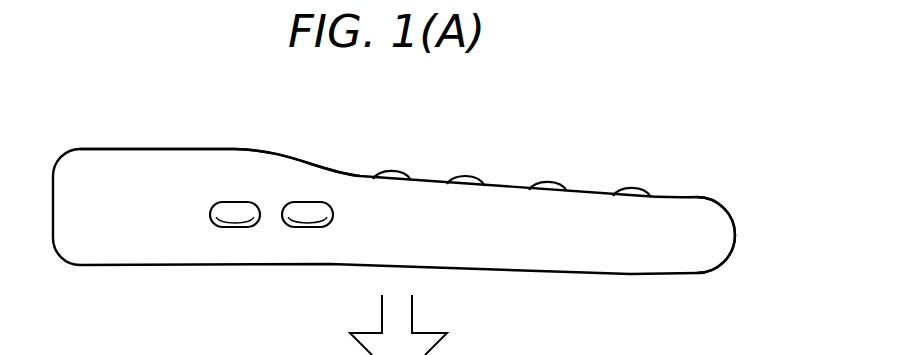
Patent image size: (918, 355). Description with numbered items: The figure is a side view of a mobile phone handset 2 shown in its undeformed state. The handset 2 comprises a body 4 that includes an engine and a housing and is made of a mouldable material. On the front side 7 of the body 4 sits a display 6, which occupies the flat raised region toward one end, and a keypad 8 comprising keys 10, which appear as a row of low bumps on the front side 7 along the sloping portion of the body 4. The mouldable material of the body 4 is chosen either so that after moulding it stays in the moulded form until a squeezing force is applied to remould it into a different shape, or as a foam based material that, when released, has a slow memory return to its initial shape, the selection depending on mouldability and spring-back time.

The mobile phone handset 2 is at (607, 127).
The body 4 is at (720, 240).
The display 6 is at (180, 148).
The front side 7 is at (340, 155).
The keypad 8 is at (664, 186).
The keys 10 is at (464, 178).